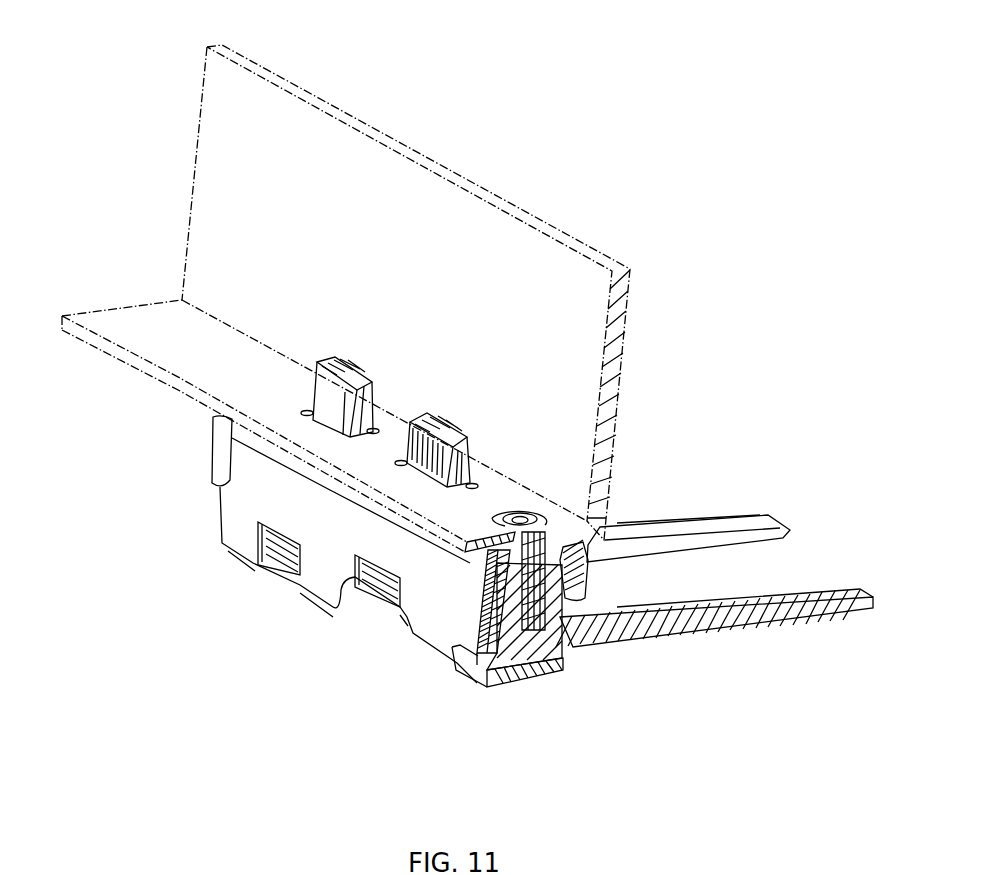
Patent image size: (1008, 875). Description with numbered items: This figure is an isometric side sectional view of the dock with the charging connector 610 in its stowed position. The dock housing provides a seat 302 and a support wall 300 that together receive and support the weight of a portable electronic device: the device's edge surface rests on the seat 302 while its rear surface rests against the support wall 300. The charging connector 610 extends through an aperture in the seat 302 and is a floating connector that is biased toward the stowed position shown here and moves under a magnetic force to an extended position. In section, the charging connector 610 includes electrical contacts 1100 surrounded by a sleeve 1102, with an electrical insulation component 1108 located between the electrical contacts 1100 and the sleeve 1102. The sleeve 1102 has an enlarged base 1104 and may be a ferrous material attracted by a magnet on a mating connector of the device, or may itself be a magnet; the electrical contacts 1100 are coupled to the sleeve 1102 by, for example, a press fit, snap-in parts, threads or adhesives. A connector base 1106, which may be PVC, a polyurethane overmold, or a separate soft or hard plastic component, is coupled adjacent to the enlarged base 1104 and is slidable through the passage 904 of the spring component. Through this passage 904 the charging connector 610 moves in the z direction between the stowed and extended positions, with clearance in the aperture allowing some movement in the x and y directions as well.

The support wall 300 is at (228, 157).
The seat 302 is at (138, 325).
The charging connector 610 is at (539, 521).
The passage 904 is at (578, 568).
The electrical contacts 1100 is at (540, 548).
The sleeve 1102 is at (513, 566).
The enlarged base 1104 is at (497, 585).
The connector base 1106 is at (512, 648).
The electrical insulation component 1108 is at (556, 530).